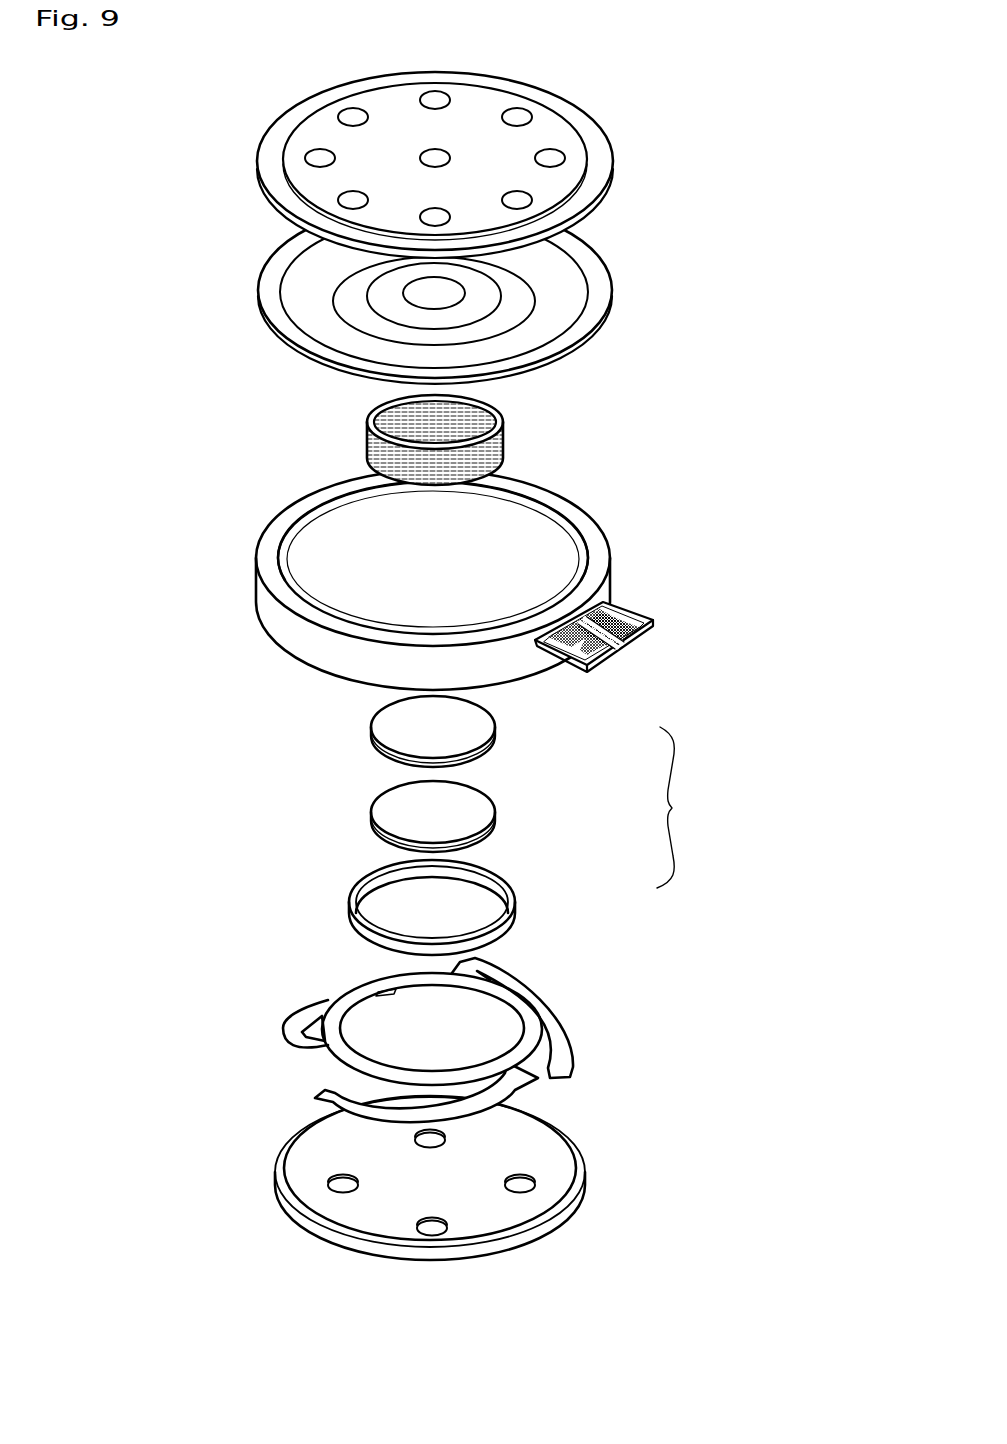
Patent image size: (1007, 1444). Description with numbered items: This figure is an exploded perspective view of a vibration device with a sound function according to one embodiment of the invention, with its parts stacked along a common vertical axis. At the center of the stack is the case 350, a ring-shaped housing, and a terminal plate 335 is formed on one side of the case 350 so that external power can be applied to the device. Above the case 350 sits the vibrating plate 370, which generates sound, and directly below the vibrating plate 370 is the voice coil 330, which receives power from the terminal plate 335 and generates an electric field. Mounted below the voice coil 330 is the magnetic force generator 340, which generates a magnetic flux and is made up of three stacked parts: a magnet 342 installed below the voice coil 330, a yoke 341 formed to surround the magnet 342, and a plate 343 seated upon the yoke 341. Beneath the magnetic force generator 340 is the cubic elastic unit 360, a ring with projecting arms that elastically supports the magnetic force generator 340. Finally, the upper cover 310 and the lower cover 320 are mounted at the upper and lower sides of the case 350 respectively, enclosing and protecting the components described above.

The upper cover 310 is at (580, 158).
The vibrating plate 370 is at (602, 290).
The voice coil 330 is at (505, 445).
The case 350 is at (262, 595).
The terminal pad 335 is at (647, 618).
The plate 343 is at (490, 732).
The magnet 342 is at (480, 818).
The yoke 341 is at (515, 900).
The magnetic force generator 340 is at (685, 807).
The cubic elastic unit 360 is at (563, 1035).
The lower cover 320 is at (583, 1163).